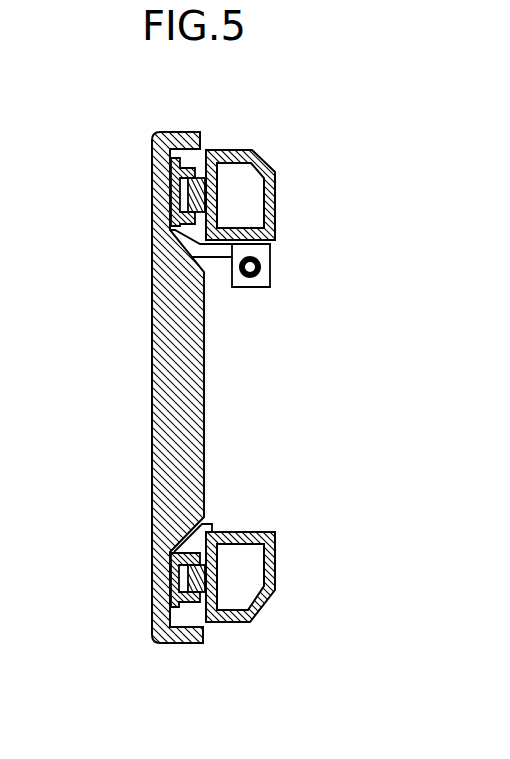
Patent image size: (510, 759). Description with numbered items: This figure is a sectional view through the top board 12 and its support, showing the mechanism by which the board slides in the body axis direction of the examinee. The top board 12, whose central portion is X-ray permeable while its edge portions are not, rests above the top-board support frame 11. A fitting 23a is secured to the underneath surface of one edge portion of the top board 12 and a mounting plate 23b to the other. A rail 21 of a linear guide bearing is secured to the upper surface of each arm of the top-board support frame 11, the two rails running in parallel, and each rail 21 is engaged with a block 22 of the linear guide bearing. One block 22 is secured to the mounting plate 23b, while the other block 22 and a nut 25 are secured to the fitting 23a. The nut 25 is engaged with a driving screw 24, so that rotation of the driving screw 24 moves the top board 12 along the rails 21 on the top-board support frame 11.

The top-board support frame 11 is at (233, 149).
The top board 12 is at (155, 480).
The rail 21 is at (178, 195).
The block 22 is at (188, 165).
The fitting 23a is at (213, 252).
The mounting plate 23b is at (206, 526).
The driving screw 24 is at (260, 272).
The nut 25 is at (272, 260).